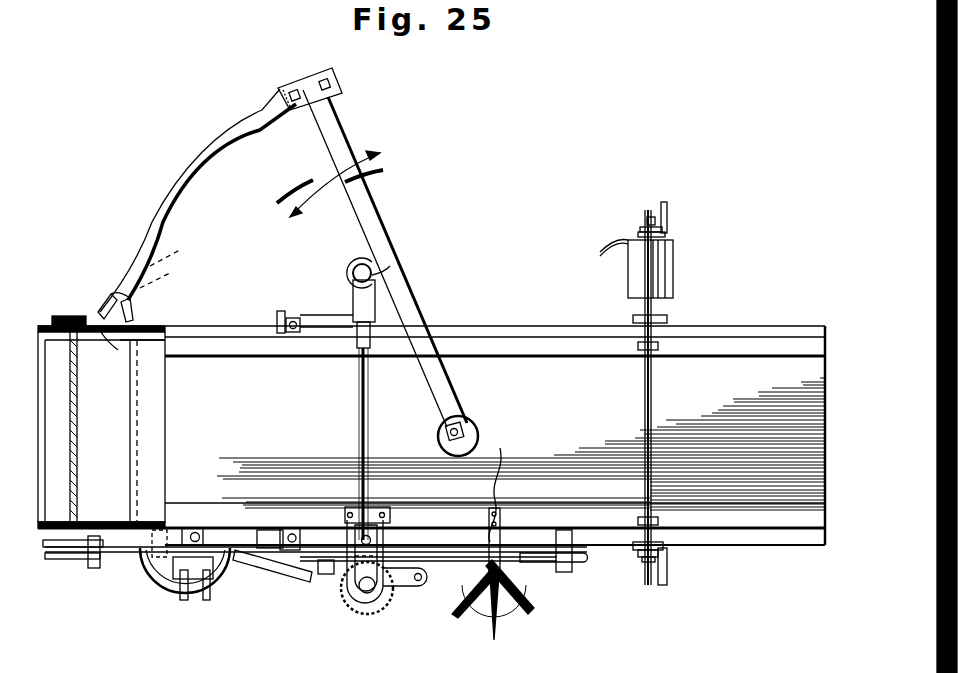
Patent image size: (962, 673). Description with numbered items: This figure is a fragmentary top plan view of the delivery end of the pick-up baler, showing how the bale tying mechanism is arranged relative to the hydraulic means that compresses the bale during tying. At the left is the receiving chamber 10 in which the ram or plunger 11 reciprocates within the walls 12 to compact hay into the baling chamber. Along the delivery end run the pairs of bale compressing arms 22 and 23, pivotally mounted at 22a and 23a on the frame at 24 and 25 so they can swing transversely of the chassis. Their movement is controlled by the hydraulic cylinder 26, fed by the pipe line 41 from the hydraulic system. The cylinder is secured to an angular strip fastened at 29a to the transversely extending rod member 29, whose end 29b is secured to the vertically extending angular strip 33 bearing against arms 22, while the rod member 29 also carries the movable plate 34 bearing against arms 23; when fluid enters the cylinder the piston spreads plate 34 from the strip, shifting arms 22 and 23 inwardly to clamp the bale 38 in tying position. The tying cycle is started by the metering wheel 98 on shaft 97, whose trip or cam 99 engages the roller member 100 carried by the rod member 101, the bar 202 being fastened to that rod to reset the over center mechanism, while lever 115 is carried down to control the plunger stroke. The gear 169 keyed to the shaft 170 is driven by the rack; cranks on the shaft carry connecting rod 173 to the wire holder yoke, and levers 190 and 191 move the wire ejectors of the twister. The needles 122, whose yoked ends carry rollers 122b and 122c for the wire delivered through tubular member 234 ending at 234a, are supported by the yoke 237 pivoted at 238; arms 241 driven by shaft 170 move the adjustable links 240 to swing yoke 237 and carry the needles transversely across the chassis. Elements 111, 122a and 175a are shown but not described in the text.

The receiving chamber 10 is at (150, 398).
The ram or plunger 11 is at (75, 406).
The walls 12 is at (166, 328).
The arms 22 is at (706, 546).
The pivot of arms 22a is at (352, 520).
The arms 23 is at (708, 326).
The pivot of arms 23a is at (294, 320).
The frame mounting 24 is at (280, 318).
The frame mounting 25 is at (272, 538).
The hydraulic cylinder 26 is at (664, 274).
The transversely extending rod member 29 is at (653, 396).
The securing point of rod member 29a is at (647, 220).
The end of rod member 29b is at (646, 564).
The vertically extending angular strip 33 is at (668, 578).
The movable plate 34 is at (668, 316).
The bale 38 is at (668, 214).
The pipe line 41 is at (598, 250).
The shaft 97 is at (500, 608).
The metering wheel 98 is at (526, 600).
The trip member or cam 99 is at (478, 598).
The roller member 100 is at (511, 490).
The rod member 101 is at (440, 566).
The link 111 is at (408, 588).
The lever 115 is at (302, 580).
The needle 122 is at (212, 160).
The arm lower end 122a is at (135, 312).
The roller 122b is at (186, 252).
The roller 122c is at (177, 274).
The gear 169 is at (362, 612).
The shaft 170 is at (386, 556).
The connecting rod 173 is at (326, 576).
The bracket 175a is at (200, 530).
The lever 190 is at (183, 600).
The lever 191 is at (207, 600).
The bar 202 is at (68, 562).
The tubular member 234 is at (65, 320).
The end of tubular member 234a is at (100, 310).
The yoke 237 is at (372, 222).
The pivot 238 is at (470, 428).
The adjustable link 240 is at (360, 392).
The arm 241 is at (380, 530).